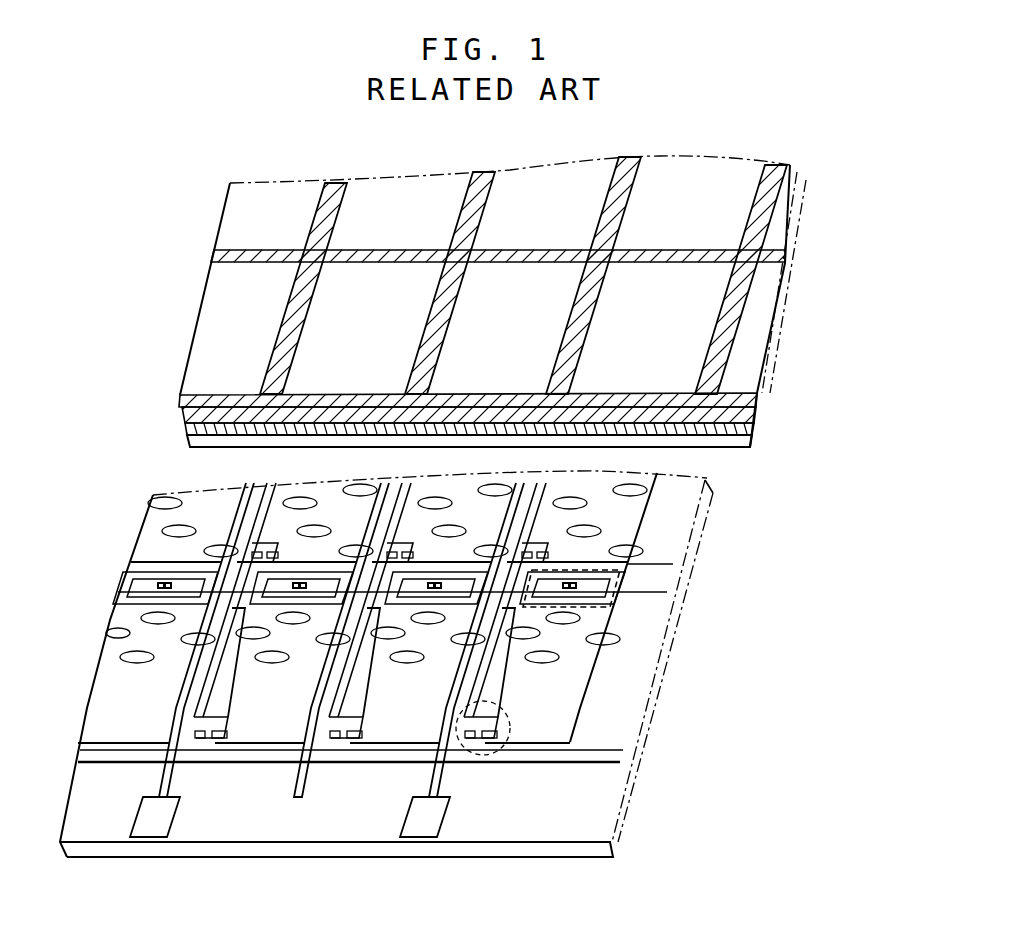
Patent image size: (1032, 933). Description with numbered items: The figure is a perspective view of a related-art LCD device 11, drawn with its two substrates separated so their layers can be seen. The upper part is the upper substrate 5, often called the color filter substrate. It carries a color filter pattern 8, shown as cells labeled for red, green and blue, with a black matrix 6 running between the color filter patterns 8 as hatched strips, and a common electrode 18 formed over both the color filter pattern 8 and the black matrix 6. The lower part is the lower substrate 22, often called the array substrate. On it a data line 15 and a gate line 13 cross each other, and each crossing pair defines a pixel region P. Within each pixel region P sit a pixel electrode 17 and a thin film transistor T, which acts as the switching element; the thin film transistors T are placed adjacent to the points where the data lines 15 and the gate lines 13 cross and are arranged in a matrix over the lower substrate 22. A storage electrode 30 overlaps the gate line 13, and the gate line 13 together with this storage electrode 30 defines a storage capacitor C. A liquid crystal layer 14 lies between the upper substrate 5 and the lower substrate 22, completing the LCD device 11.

The upper substrate 5 is at (182, 405).
The black matrix 6 is at (766, 255).
The color filter pattern 8 is at (730, 215).
The common electrode 18 is at (740, 440).
The LCD device 11 is at (776, 707).
The lower substrate 22 is at (574, 847).
The gate line 13 is at (588, 756).
The liquid crystal layer 14 is at (627, 542).
The data line 15 is at (430, 784).
The pixel electrode 17 is at (582, 717).
The storage electrode 30 is at (618, 578).
The storage capacitor C is at (613, 603).
The thin film transistor T is at (498, 752).
The pixel region P is at (627, 673).